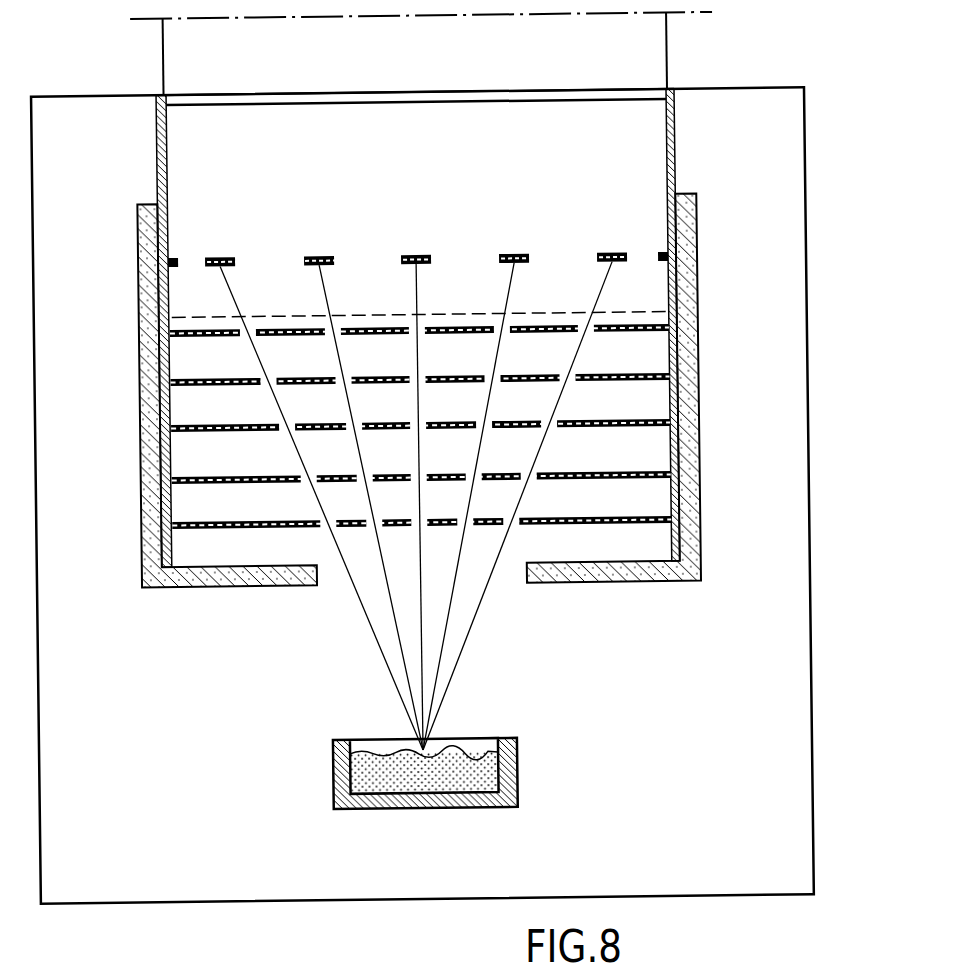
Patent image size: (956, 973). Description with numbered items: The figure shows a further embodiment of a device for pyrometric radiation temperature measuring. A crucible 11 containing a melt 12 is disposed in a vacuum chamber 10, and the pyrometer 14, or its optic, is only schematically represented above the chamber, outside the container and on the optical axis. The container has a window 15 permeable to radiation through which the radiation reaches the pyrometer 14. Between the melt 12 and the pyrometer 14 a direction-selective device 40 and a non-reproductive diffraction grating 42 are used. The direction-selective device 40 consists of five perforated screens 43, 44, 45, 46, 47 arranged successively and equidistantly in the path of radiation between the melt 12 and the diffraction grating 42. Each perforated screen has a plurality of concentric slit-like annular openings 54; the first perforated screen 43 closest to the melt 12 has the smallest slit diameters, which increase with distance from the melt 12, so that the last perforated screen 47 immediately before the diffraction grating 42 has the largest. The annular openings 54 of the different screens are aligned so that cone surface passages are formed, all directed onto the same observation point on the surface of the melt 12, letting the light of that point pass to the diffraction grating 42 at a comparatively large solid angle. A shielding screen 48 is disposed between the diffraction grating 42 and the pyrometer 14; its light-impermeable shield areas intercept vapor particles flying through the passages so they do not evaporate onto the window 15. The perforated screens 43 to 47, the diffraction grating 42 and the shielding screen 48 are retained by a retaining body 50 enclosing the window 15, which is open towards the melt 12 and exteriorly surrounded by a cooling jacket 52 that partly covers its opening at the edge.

The vacuum chamber 10 is at (809, 622).
The crucible 11 is at (510, 775).
The melt 12 is at (474, 754).
The pyrometer 14 is at (651, 45).
The window 15 is at (655, 91).
The direction-selective device 40 is at (138, 329).
The non-reproductive diffraction grating 42 is at (189, 313).
The first perforated screen 43 is at (238, 528).
The perforated screen 44 is at (240, 483).
The perforated screen 45 is at (241, 433).
The perforated screen 46 is at (238, 386).
The last perforated screen 47 is at (229, 338).
The shielding screen 48 is at (341, 239).
The retaining body 50 is at (680, 135).
The cooling jacket 52 is at (697, 525).
The annular openings 54 is at (345, 335).